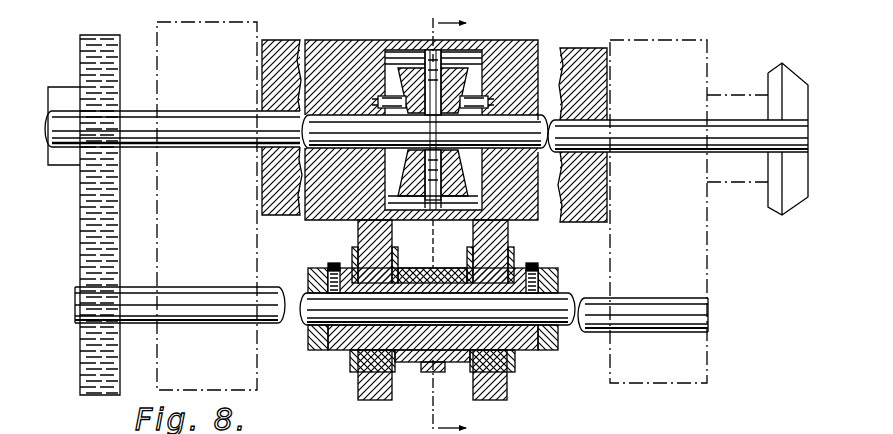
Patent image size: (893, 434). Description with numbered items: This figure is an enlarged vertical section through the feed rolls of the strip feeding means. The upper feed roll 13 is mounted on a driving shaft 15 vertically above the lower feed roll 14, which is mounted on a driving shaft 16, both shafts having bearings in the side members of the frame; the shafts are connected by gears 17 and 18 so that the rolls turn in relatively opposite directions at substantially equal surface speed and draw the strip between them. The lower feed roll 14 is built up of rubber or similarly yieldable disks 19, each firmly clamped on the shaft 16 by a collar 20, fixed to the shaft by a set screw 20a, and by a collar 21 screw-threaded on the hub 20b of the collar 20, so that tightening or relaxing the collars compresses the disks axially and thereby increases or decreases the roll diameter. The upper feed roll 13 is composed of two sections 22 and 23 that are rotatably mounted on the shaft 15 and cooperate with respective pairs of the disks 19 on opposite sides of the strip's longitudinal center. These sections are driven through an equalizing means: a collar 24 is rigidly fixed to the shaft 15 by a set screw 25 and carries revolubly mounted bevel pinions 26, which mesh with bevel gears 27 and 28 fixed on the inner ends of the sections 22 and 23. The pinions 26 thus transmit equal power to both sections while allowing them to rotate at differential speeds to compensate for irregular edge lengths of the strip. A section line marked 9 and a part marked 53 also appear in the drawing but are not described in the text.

The section line 9- 9 is at (427, 223).
The upper feed roll 13 is at (500, 60).
The lower feed roll 14 is at (508, 398).
The driving shaft 15 is at (190, 119).
The driving shaft 16 is at (199, 297).
The gear 17 is at (82, 191).
The gear 18 is at (82, 345).
The disks 19 is at (358, 392).
The collar 20 is at (316, 352).
The set screw 20a is at (563, 259).
The hub 20b is at (438, 355).
The collar 21 is at (398, 374).
The roll section 22 is at (358, 224).
The roll section 23 is at (512, 232).
The collar 24 is at (400, 162).
The set screw 25 is at (388, 128).
The bevel pinions 26 is at (442, 75).
The bevel gear 27 is at (392, 100).
The bevel gear 28 is at (476, 100).
The hand wheel hub 53 is at (797, 207).